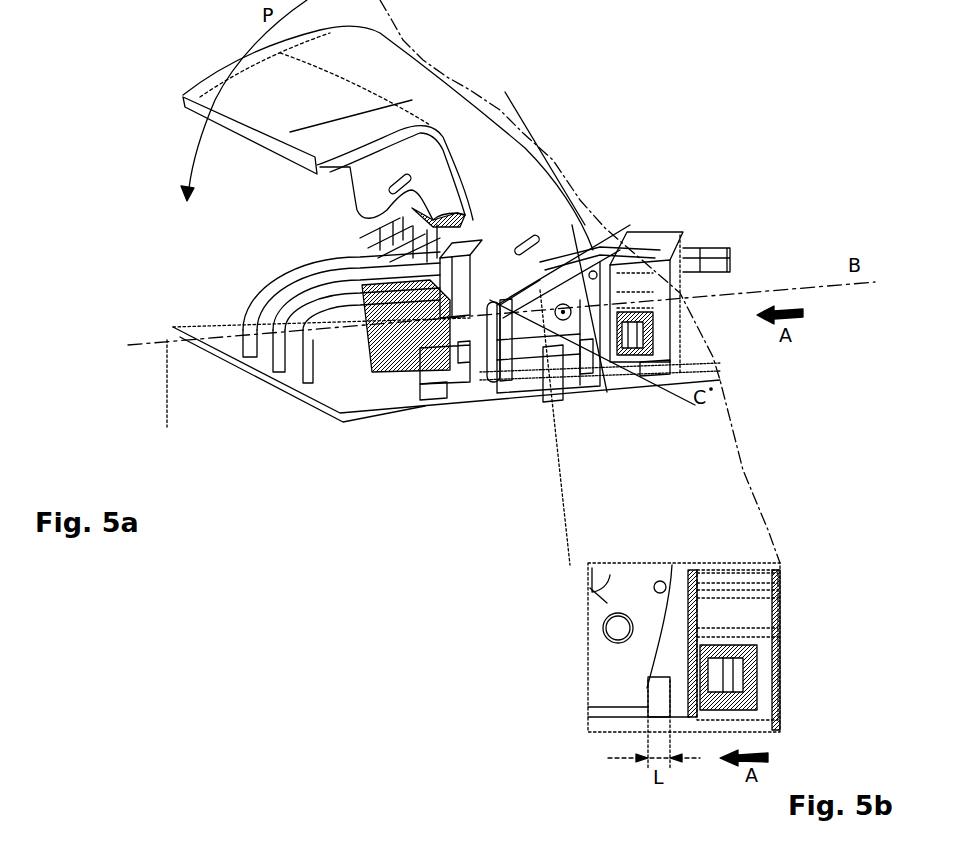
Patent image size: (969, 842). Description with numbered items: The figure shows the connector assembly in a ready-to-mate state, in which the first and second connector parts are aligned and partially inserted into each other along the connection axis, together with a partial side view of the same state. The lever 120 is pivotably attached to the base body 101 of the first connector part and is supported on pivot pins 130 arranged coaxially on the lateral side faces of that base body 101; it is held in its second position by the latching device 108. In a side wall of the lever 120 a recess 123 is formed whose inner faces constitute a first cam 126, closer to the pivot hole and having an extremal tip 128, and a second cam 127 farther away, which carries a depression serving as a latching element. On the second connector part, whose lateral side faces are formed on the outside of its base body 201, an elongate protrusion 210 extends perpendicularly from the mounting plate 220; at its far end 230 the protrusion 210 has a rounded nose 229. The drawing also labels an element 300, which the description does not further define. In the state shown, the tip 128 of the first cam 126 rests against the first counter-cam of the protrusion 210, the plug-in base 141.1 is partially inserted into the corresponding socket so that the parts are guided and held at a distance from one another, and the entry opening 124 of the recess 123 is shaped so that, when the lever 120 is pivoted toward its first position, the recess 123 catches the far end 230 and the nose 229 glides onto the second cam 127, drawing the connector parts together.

In FIG. 5a, the far end 230 is at (503, 290).
In FIG. 5a, the lever 120 is at (513, 275).
In FIG. 5b, the lever 120 is at (600, 590).
In FIG. 5a, the second cam 127 is at (490, 280).
In FIG. 5a, the entry opening 124 is at (522, 280).
In FIG. 5a, the recess 123 is at (580, 260).
In FIG. 5a, the latching device 108 is at (640, 250).
In FIG. 5a, the cable bundle 300 is at (373, 363).
In FIG. 5a, the nose 229 is at (420, 370).
In FIG. 5a, the elongate protrusion 210 is at (482, 399).
In FIG. 5a, the mounting plate 220 is at (495, 392).
In FIG. 5a, the tip 128 is at (580, 414).
In FIG. 5a, the first cam 126 is at (629, 413).
In FIG. 5a, the pivot pin 130 is at (685, 414).
In FIG. 5b, the base body 101 is at (600, 670).
In FIG. 5b, the plug-in base 141.1 is at (653, 693).
In FIG. 5b, the base body 201 is at (723, 607).